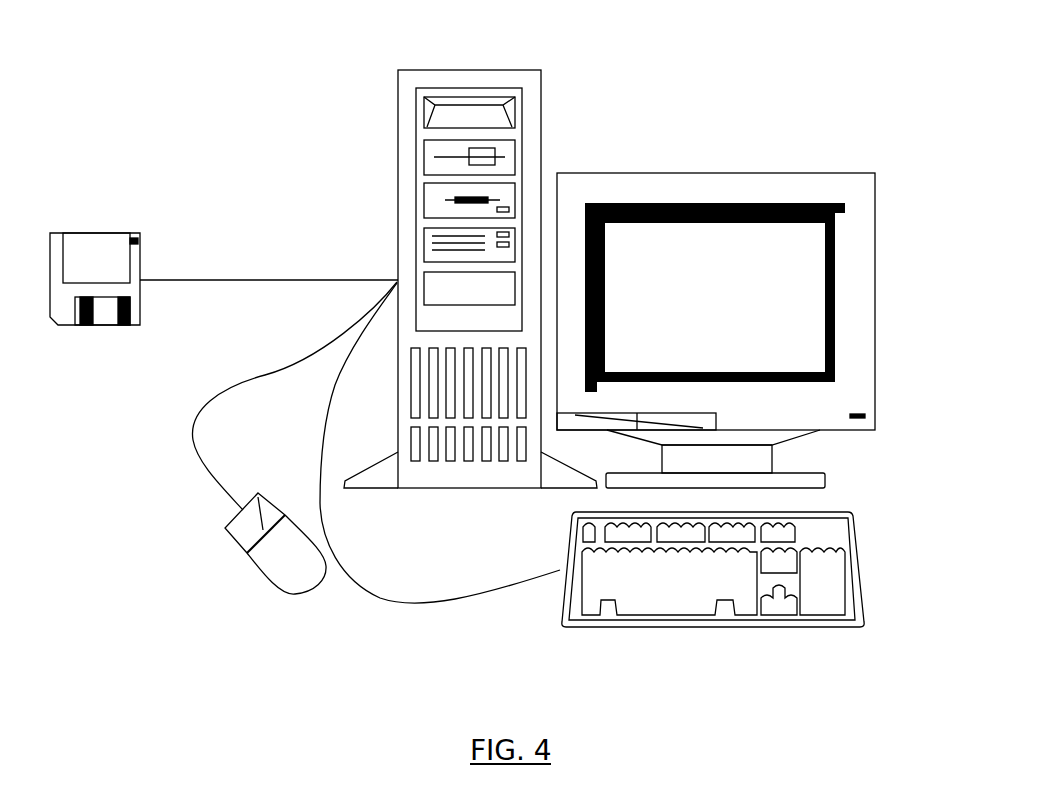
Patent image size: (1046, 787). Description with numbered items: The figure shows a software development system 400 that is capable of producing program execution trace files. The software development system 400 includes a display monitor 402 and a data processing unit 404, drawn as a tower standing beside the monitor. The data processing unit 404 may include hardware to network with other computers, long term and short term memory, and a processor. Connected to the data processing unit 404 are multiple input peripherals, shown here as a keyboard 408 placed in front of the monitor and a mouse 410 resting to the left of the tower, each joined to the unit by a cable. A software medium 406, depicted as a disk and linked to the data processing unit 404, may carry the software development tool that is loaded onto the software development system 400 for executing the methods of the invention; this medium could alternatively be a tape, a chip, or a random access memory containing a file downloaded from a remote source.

The software development system 400 is at (126, 66).
The display monitor 402 is at (717, 173).
The data processing unit 404 is at (447, 70).
The software medium 406 is at (118, 270).
The keyboard 408 is at (865, 569).
The mouse 410 is at (224, 544).